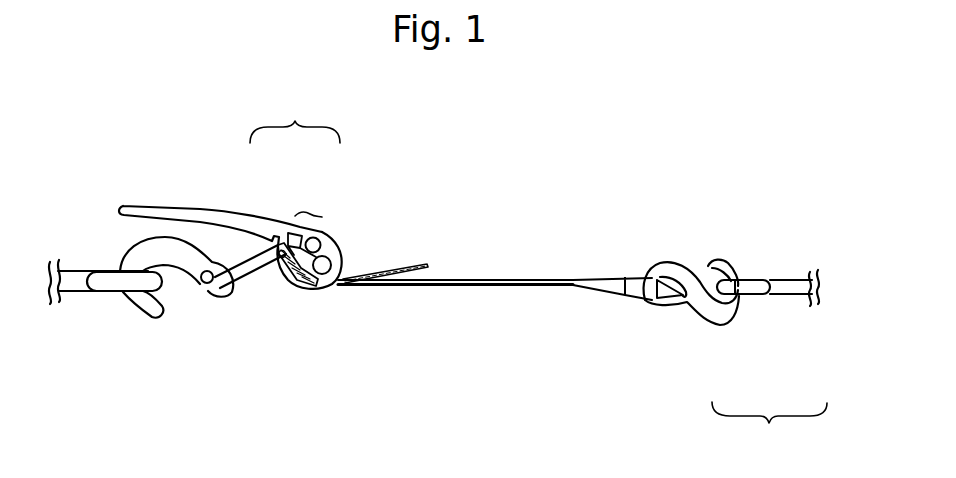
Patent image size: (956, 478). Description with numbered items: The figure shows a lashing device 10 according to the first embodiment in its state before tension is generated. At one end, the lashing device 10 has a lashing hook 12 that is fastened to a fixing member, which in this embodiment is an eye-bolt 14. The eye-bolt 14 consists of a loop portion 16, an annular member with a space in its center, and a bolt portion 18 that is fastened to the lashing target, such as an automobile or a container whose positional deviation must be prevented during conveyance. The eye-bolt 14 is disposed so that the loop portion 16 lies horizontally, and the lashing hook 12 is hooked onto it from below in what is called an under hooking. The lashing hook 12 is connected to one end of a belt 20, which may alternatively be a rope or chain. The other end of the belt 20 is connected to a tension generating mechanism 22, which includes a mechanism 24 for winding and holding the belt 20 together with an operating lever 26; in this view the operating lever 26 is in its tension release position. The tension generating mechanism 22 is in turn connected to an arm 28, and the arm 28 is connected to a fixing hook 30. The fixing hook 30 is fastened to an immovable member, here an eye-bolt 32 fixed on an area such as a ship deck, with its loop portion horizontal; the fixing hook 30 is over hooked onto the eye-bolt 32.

The lashing device 10 is at (503, 269).
The lashing hook 12 is at (705, 313).
The eye-bolt 14 is at (769, 432).
The loop portion 16 is at (740, 298).
The bolt portion 18 is at (789, 295).
The belt 20 is at (472, 287).
The tension generating mechanism 22 is at (295, 115).
The mechanism for winding and holding the belt 24 is at (343, 234).
The operating lever 26 is at (200, 208).
The arm 28 is at (250, 270).
The fixing hook 30 is at (187, 272).
The eye-bolt 32 is at (108, 290).